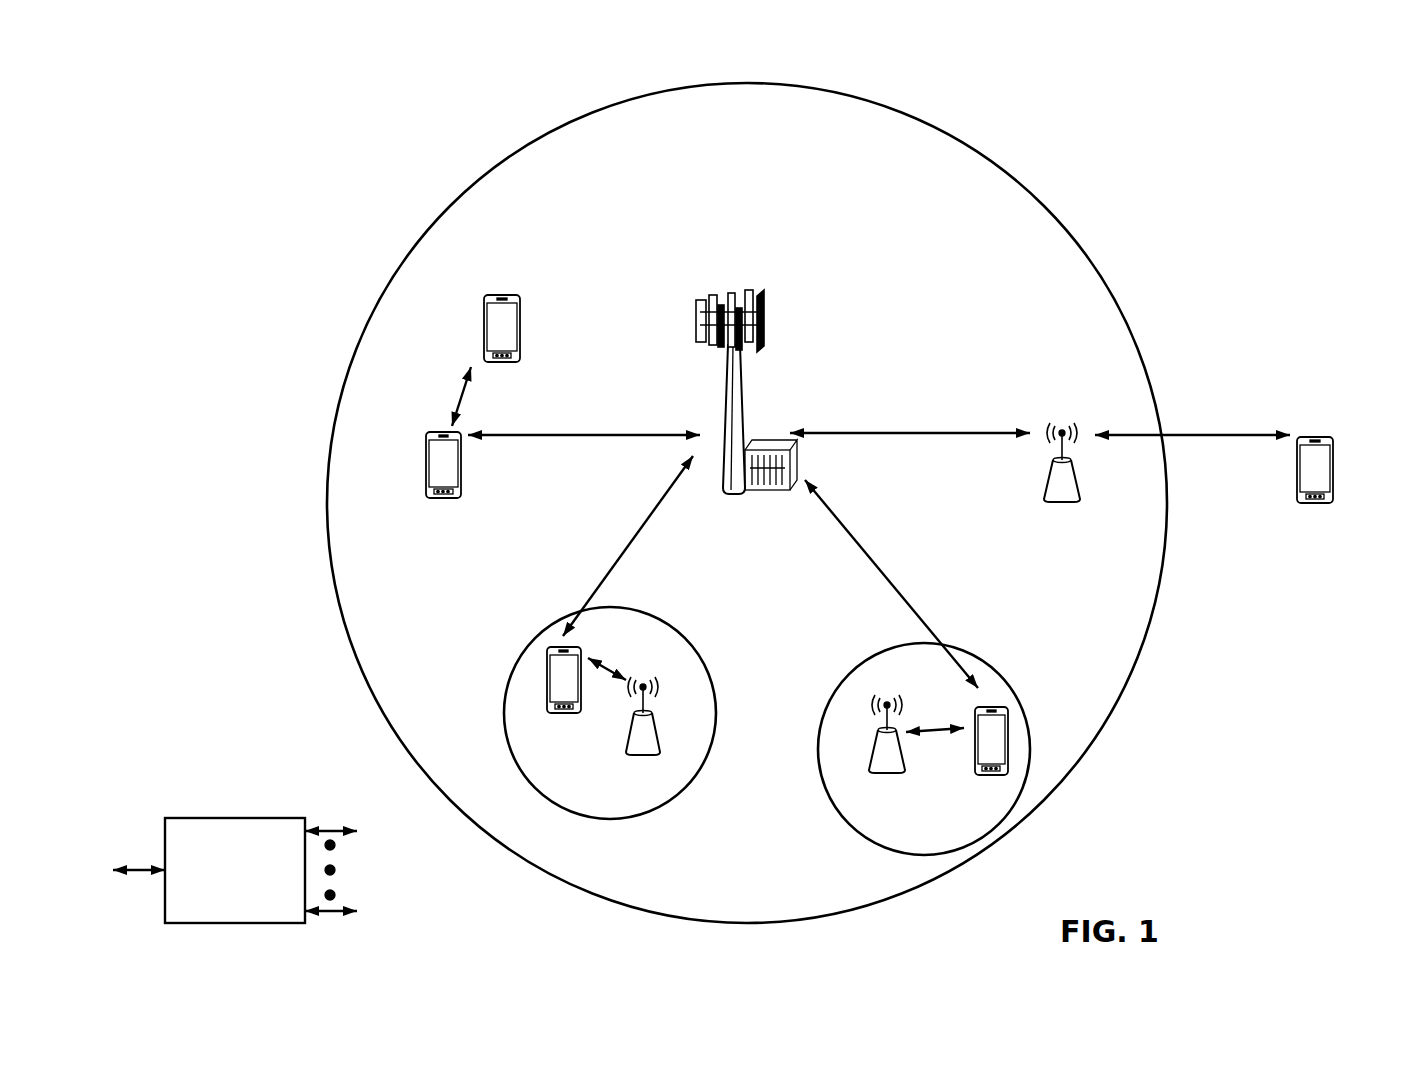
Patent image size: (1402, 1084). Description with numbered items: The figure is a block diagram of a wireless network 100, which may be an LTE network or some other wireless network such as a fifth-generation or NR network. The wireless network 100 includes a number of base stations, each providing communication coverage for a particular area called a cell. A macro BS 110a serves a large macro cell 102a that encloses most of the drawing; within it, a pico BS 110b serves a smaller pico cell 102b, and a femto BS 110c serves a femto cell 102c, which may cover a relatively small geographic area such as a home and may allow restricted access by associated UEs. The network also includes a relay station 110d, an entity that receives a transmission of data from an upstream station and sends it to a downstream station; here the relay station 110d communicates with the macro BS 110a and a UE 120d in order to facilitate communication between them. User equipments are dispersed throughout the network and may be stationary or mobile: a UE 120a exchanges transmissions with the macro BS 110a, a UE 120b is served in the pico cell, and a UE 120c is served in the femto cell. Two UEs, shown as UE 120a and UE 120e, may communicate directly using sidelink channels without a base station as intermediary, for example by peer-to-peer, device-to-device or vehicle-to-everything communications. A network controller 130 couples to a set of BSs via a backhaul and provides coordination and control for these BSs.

The wireless network 100 is at (212, 77).
The macro cell 102a is at (1028, 187).
The pico cell 102b is at (699, 651).
The femto cell 102c is at (860, 662).
The macro BS 110a is at (758, 283).
The pico BS 110b is at (665, 742).
The femto BS 110c is at (871, 760).
The relay station 110d is at (1063, 425).
The UE 120a is at (425, 462).
The UE 120b is at (549, 714).
The UE 120c is at (977, 776).
The UE 120d is at (1328, 435).
The UE 120e is at (482, 316).
The network controller 130 is at (234, 818).